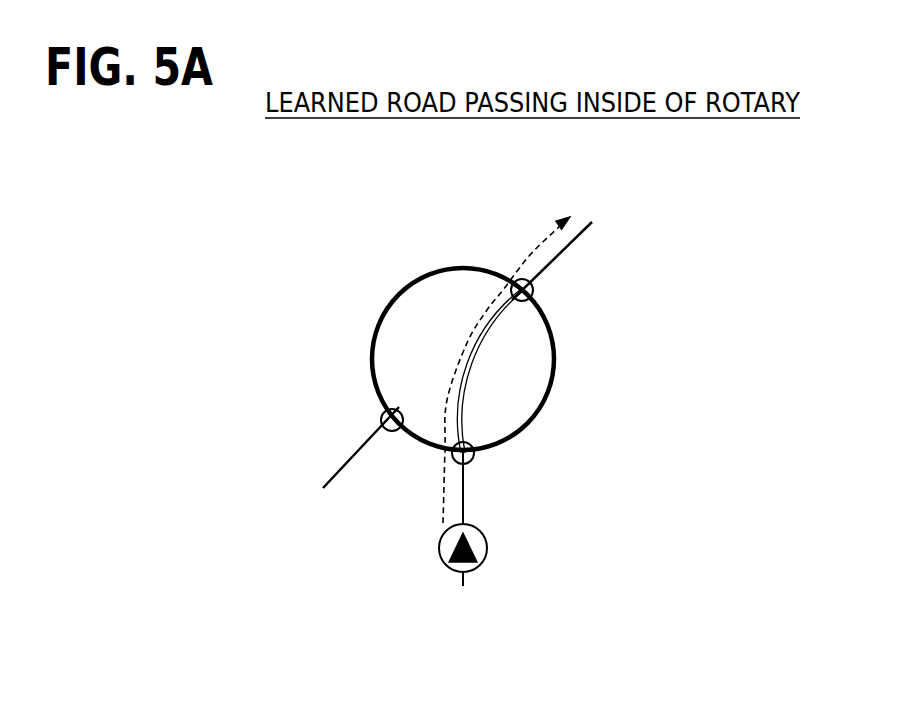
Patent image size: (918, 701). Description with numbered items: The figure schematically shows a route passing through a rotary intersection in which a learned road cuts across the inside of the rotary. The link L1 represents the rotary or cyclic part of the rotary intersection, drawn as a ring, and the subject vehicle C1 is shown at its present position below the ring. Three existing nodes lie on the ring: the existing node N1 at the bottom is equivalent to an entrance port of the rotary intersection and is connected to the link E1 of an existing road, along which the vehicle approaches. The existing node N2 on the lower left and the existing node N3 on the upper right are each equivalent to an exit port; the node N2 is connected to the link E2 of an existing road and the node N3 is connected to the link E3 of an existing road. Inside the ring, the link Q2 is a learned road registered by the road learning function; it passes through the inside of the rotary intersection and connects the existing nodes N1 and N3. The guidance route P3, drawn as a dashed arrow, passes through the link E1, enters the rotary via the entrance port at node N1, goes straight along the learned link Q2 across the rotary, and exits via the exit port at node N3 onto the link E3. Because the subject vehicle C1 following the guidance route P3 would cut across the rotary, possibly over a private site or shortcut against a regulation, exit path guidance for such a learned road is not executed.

The link of rotary part L1 is at (627, 394).
The link of existing road E1 is at (465, 505).
The link of existing road E2 is at (355, 458).
The link of existing road E3 is at (556, 262).
The existing node N1 is at (478, 464).
The existing node N2 is at (405, 409).
The existing node N3 is at (539, 295).
The guidance route P3 is at (462, 352).
The link of learned road Q2 is at (481, 350).
The subject vehicle C1 is at (440, 548).